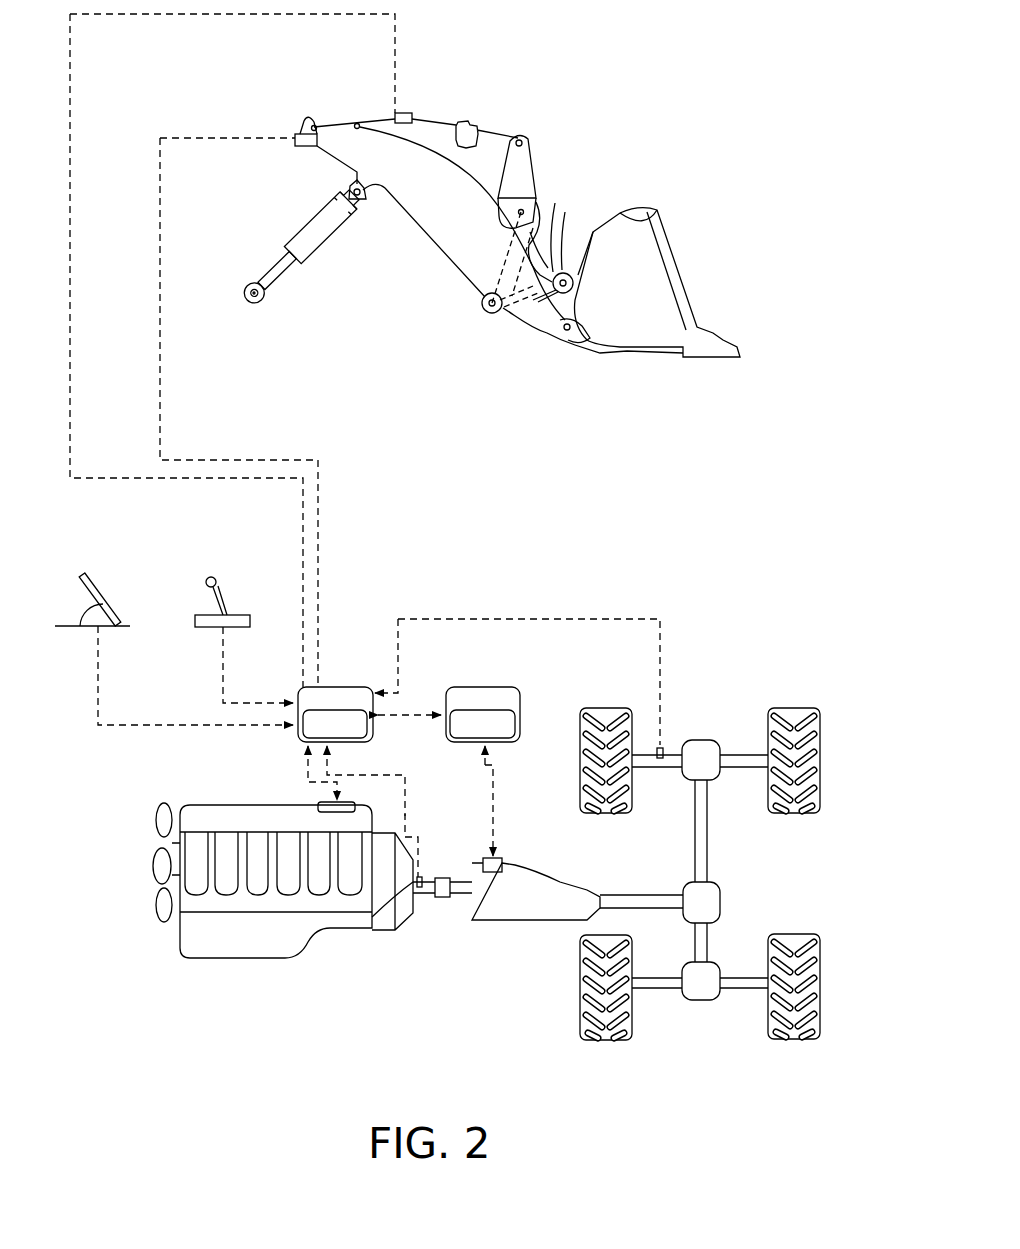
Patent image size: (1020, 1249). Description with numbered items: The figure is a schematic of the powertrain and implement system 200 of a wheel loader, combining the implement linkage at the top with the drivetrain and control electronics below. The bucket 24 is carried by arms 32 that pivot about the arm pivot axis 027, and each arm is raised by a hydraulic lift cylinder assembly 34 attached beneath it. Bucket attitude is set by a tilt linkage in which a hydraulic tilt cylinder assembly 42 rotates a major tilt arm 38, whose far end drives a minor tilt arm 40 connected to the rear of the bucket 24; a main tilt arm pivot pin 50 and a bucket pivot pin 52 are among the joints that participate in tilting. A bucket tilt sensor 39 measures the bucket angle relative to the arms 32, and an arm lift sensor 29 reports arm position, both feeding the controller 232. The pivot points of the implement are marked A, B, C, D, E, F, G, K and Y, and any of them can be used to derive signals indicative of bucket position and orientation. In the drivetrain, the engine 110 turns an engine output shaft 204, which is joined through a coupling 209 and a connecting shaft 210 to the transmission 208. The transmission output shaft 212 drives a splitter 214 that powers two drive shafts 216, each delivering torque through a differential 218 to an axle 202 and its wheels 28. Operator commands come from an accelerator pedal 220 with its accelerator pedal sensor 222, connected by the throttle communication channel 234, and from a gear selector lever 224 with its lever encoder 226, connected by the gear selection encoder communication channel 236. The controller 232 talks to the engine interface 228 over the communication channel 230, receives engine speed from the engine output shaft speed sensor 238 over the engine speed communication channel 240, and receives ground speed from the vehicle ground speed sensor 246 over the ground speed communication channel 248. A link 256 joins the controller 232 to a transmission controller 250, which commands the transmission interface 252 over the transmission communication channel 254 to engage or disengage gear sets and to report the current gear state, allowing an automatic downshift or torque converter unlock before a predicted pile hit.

The arm pivot axis 027 is at (293, 130).
The arm lift sensor 29 is at (297, 146).
The arms 32 is at (417, 203).
The hydraulic lift cylinder assembly 34 is at (300, 252).
The major tilt arm 38 is at (521, 165).
The bucket tilt sensor 39 is at (401, 113).
The minor tilt arm 40 is at (553, 215).
The hydraulic tilt cylinder assembly 42 is at (460, 124).
The main tilt arm pivot pin 50 is at (540, 200).
The bucket pivot pin 52 is at (577, 342).
The bucket 24 is at (650, 262).
The wheels 28 is at (608, 708).
The engine 110 is at (197, 815).
The powertrain and implement system 200 is at (488, 580).
The axles 202 is at (735, 760).
The engine output shaft 204 is at (419, 890).
The transmission 208 is at (545, 895).
The coupling 209 is at (445, 878).
The connecting shaft 210 is at (468, 895).
The transmission output shaft 212 is at (612, 900).
The splitter 214 is at (705, 900).
The drive shafts 216 is at (702, 832).
The differential 218 is at (695, 748).
The accelerator pedal 220 is at (95, 578).
The accelerator pedal sensor 222 is at (83, 612).
The gear selector lever 224 is at (212, 576).
The lever encoder 226 is at (238, 628).
The engine interface 228 is at (320, 804).
The communication channel 230 is at (308, 765).
The engine controller 232 is at (325, 690).
The throttle communication channel 234 is at (98, 672).
The gear selection encoder communication channel 236 is at (223, 657).
The engine output shaft speed sensor 238 is at (372, 917).
The engine speed communication channel 240 is at (405, 815).
The vehicle ground speed sensor 246 is at (656, 750).
The ground speed communication channel 248 is at (550, 619).
The transmission controller 250 is at (505, 700).
The transmission interface 252 is at (502, 860).
The transmission communication channel 254 is at (495, 785).
The controller communication line 256 is at (397, 717).
The pivot point A is at (311, 122).
The pivot point B is at (562, 332).
The pivot point C is at (564, 276).
The pivot point D is at (482, 300).
The pivot point E is at (516, 137).
The pivot point F is at (528, 207).
The pivot point G is at (355, 120).
The pivot point K is at (348, 188).
The pivot point Y is at (251, 282).